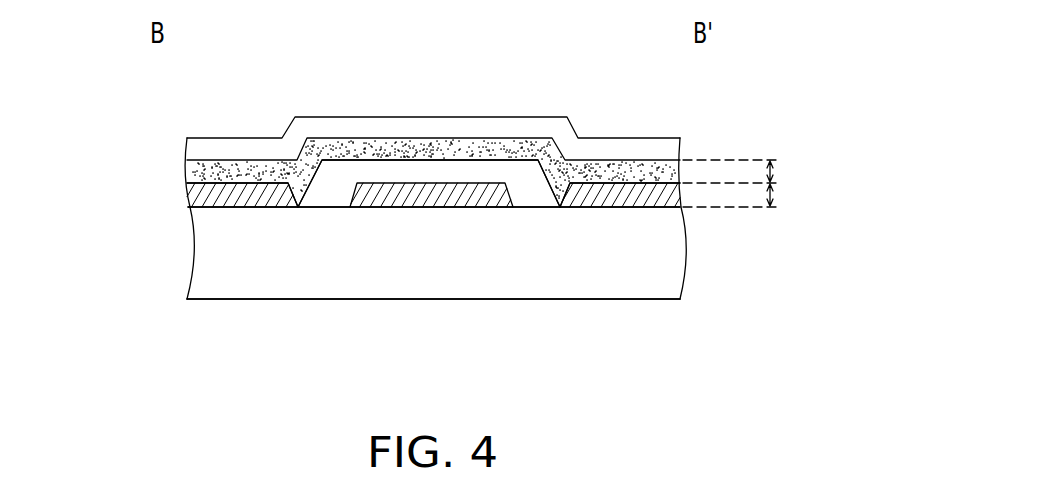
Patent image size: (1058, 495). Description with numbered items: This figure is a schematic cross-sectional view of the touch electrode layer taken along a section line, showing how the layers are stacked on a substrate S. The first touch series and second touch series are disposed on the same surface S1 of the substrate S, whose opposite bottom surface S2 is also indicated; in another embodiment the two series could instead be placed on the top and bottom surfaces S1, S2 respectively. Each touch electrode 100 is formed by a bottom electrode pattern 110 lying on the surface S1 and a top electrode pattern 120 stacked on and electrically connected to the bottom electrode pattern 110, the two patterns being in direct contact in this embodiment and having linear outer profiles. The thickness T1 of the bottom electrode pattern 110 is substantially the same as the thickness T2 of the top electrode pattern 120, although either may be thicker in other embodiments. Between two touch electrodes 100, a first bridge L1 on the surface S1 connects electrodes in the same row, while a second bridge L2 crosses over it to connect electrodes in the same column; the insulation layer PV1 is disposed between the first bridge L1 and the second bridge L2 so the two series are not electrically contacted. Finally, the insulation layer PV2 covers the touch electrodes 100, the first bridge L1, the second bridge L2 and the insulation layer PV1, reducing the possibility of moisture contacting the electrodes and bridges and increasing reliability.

The touch electrode 100 is at (103, 143).
The bottom electrode pattern 110 is at (188, 195).
The top electrode pattern 120 is at (187, 165).
The first bridge L1 is at (443, 205).
The second bridge L2 is at (392, 150).
The insulation layer PV1 is at (481, 168).
The insulation layer PV2 is at (668, 142).
The substrate S is at (673, 247).
The surface S1 is at (622, 207).
The bottom surface S2 is at (628, 301).
The thickness T1 is at (745, 197).
The thickness T2 is at (745, 172).